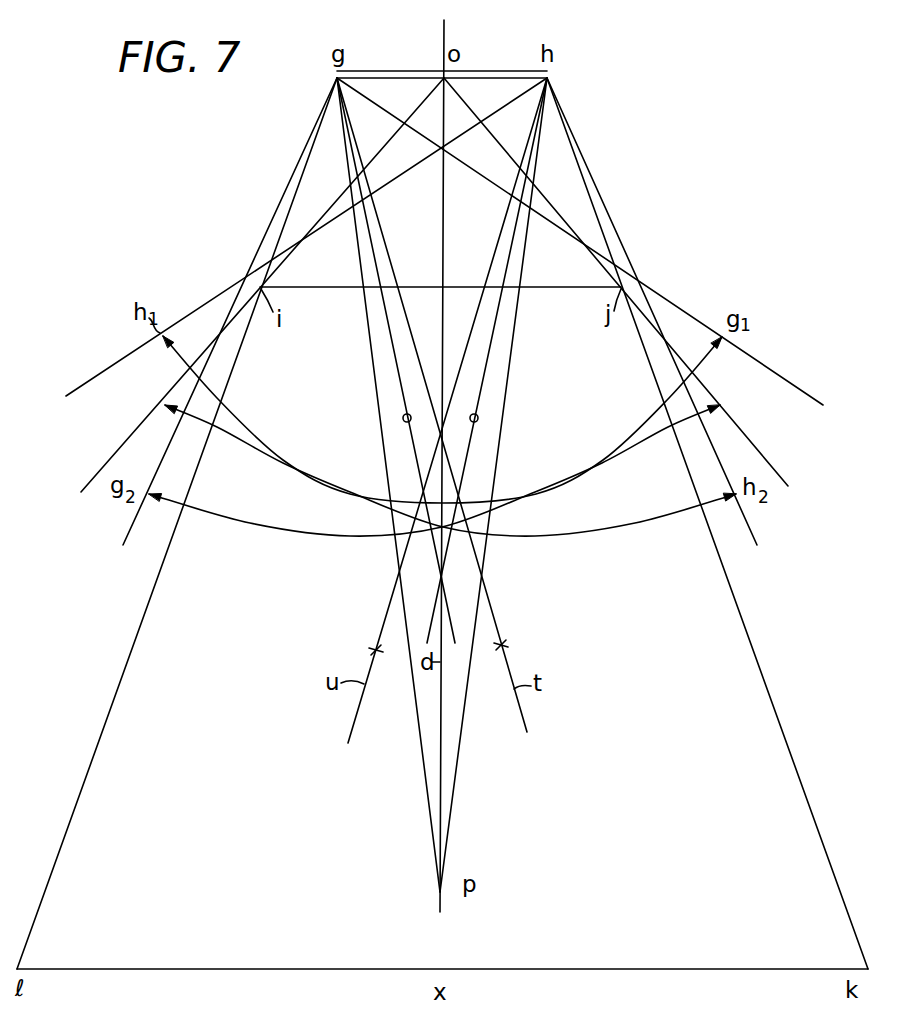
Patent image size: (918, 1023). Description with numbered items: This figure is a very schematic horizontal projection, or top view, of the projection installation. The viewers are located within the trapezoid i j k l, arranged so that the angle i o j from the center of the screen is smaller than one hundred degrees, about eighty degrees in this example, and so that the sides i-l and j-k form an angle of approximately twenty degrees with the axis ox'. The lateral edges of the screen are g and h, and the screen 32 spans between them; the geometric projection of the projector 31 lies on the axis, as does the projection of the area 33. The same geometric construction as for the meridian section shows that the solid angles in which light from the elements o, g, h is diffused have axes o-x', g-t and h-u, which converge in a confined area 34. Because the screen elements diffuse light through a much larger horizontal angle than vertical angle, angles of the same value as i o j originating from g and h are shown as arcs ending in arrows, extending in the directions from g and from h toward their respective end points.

The geometric projection of the projector 31 is at (438, 890).
The light source 32 is at (497, 70).
The geometric projection of the area 33 is at (444, 577).
The confined area 34 is at (445, 430).